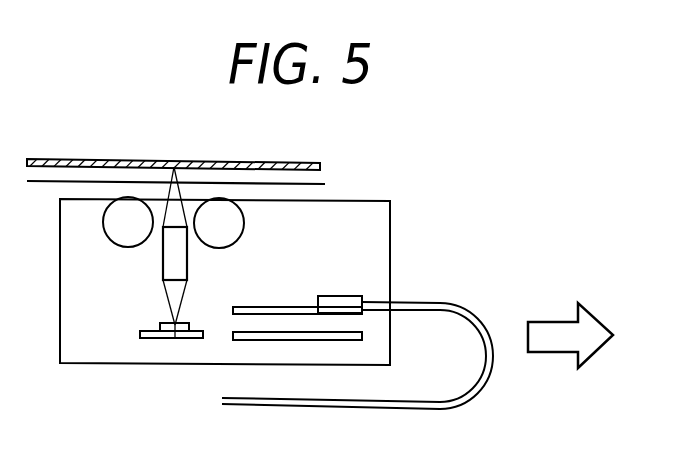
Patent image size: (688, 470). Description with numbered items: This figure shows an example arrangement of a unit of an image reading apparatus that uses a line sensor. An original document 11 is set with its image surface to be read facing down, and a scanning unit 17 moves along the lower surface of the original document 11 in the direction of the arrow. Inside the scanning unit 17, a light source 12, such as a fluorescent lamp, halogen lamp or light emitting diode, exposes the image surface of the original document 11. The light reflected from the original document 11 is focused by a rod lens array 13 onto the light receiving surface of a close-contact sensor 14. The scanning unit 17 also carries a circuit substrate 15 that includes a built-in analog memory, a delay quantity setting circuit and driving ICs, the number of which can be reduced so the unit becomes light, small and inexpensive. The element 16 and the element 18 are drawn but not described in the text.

The original document 11 is at (263, 163).
The light source 12 is at (109, 241).
The rod lens array 13 is at (163, 263).
The close-contact sensor 14 is at (140, 335).
The circuit substrate 15 is at (277, 306).
The flexible cable 16 is at (428, 303).
The scanning unit 17 is at (390, 228).
The platen glass 18 is at (314, 182).